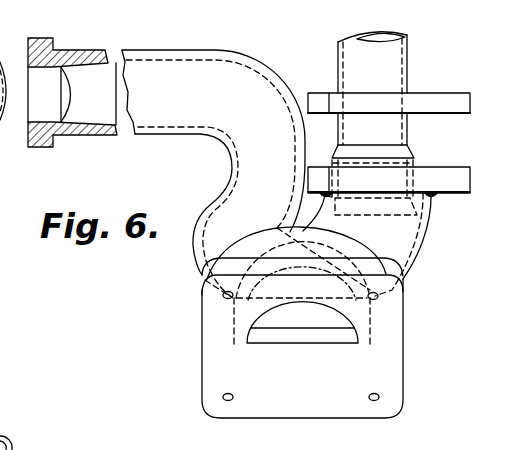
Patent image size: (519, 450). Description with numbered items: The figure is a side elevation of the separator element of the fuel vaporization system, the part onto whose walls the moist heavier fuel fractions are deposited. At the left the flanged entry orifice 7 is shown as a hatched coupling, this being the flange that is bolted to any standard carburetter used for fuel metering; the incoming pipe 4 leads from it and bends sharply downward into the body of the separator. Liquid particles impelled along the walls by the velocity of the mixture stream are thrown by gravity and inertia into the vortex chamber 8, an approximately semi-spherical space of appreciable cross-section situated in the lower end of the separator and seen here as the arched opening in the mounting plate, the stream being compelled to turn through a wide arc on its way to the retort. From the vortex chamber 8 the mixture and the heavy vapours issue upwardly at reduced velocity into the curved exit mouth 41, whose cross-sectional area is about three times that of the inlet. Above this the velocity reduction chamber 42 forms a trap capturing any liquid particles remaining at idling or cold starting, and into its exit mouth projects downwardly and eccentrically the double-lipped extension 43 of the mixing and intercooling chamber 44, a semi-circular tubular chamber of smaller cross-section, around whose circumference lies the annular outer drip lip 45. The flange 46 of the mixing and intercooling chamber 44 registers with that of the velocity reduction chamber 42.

The pipe 4 is at (167, 123).
The flanged entry orifice 7 is at (29, 51).
The vortex chamber 8 is at (302, 305).
The curved chamber or exit mouth 41 is at (412, 170).
The velocity reduction chamber 42 is at (425, 247).
The double-lipped extension 43 is at (395, 138).
The mixing and intercooling chamber 44 is at (338, 53).
The annular outer drip lip 45 is at (432, 219).
The flange 46 is at (435, 97).